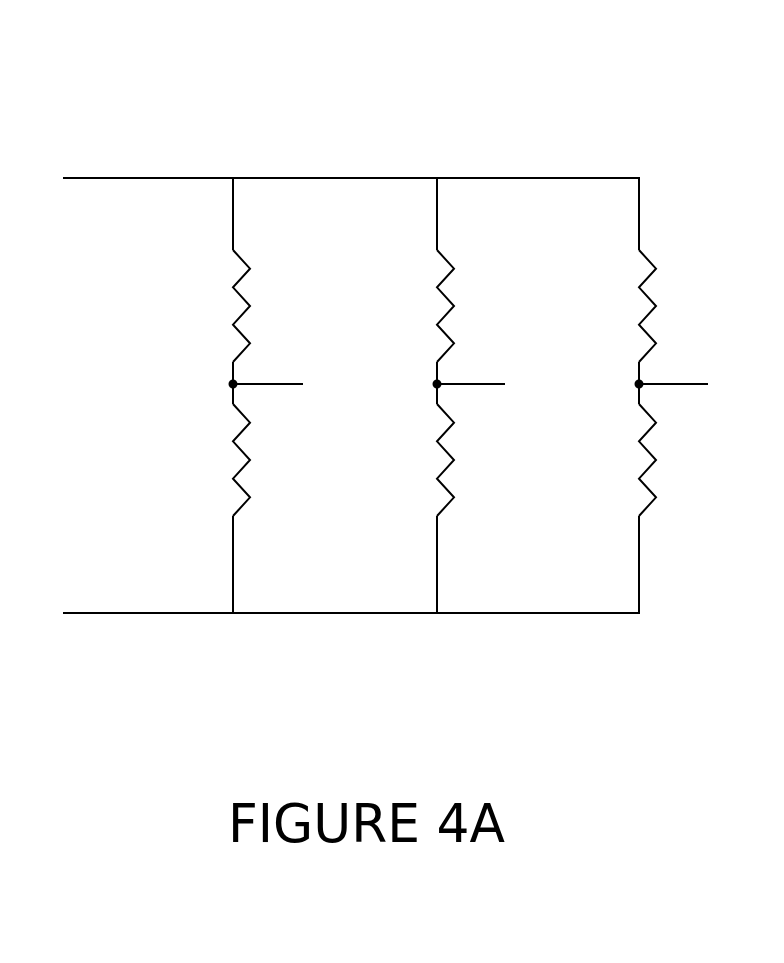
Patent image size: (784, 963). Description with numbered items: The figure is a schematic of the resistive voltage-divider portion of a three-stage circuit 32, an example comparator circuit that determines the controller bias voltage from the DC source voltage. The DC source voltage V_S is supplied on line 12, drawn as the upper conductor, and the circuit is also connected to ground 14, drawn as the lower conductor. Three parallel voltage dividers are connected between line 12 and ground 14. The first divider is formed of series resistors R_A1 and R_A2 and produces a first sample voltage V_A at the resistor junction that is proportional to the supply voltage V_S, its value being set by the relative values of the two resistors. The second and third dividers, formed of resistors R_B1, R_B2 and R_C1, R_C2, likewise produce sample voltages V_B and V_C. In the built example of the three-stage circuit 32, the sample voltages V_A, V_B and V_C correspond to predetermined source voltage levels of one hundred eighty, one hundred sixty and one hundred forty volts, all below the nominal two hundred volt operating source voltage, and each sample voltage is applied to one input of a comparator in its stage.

The line 12 is at (150, 130).
The ground 14 is at (189, 652).
The three-stage circuit 32 is at (783, 84).